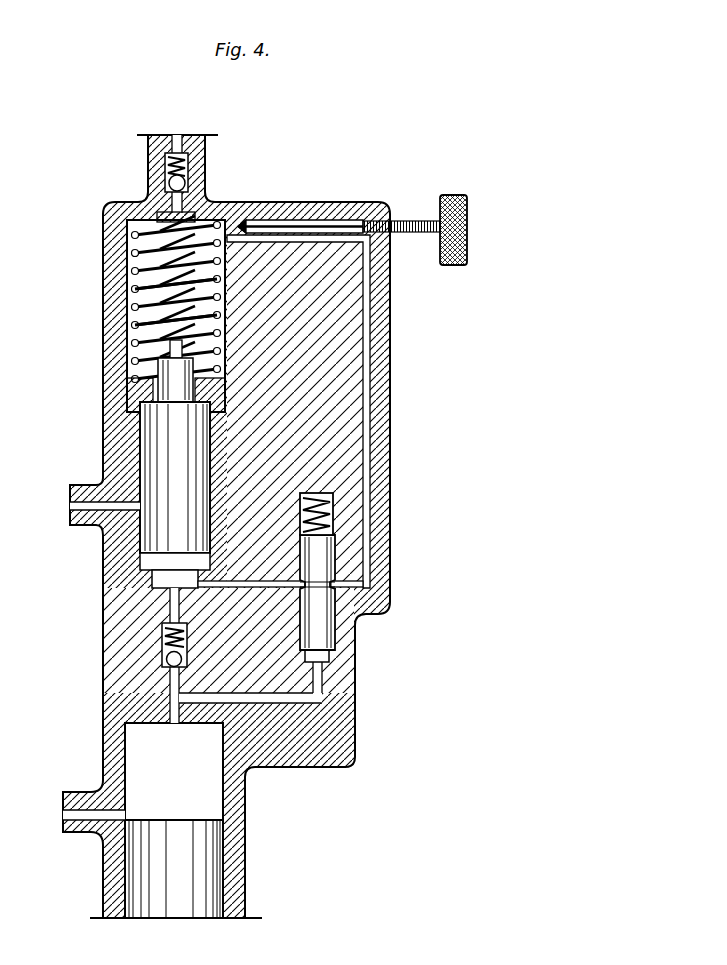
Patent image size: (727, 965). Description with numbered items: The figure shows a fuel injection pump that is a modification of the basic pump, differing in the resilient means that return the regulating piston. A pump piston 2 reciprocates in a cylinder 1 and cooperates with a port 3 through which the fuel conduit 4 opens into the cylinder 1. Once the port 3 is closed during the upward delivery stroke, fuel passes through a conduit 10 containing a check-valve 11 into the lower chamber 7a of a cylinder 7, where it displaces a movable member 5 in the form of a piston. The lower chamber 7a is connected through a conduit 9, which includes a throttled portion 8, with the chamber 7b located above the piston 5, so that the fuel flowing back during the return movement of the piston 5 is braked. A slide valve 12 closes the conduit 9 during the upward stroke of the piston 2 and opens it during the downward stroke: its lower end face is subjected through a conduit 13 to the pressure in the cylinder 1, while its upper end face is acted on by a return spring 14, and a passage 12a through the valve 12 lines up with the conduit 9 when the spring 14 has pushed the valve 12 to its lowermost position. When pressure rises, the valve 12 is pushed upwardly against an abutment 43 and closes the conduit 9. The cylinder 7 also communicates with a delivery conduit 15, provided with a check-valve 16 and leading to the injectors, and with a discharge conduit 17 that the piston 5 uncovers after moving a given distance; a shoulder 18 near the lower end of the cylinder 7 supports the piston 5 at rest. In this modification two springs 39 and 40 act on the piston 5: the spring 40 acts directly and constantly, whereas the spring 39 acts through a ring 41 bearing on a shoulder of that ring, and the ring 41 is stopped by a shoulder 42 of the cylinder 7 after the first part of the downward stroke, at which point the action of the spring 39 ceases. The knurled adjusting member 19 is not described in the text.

The cylinder 1 is at (232, 885).
The piston 2 is at (180, 848).
The port 3 is at (128, 818).
The fuel conduit 4 is at (80, 813).
The movable member 5 is at (160, 534).
The cylinder 7 is at (141, 479).
The lower chamber 7a is at (205, 579).
The chamber 7b is at (132, 243).
The throttled portion 8 is at (243, 226).
The conduit 9 is at (366, 360).
The conduit 10 is at (175, 712).
The check-valve 11 is at (166, 659).
The slide valve 12 is at (315, 626).
The passage 12a is at (338, 584).
The conduit 13 is at (316, 700).
The return spring 14 is at (330, 516).
The delivery conduit 15 is at (181, 205).
The check-valve 16 is at (170, 184).
The discharge conduit 17 is at (82, 506).
The shoulder 18 is at (140, 568).
The adjusting screw 19 is at (345, 226).
The spring 39 is at (137, 289).
The spring 40 is at (138, 321).
The ring 41 is at (150, 381).
The shoulder 42 is at (128, 418).
The abutment 43 is at (318, 498).